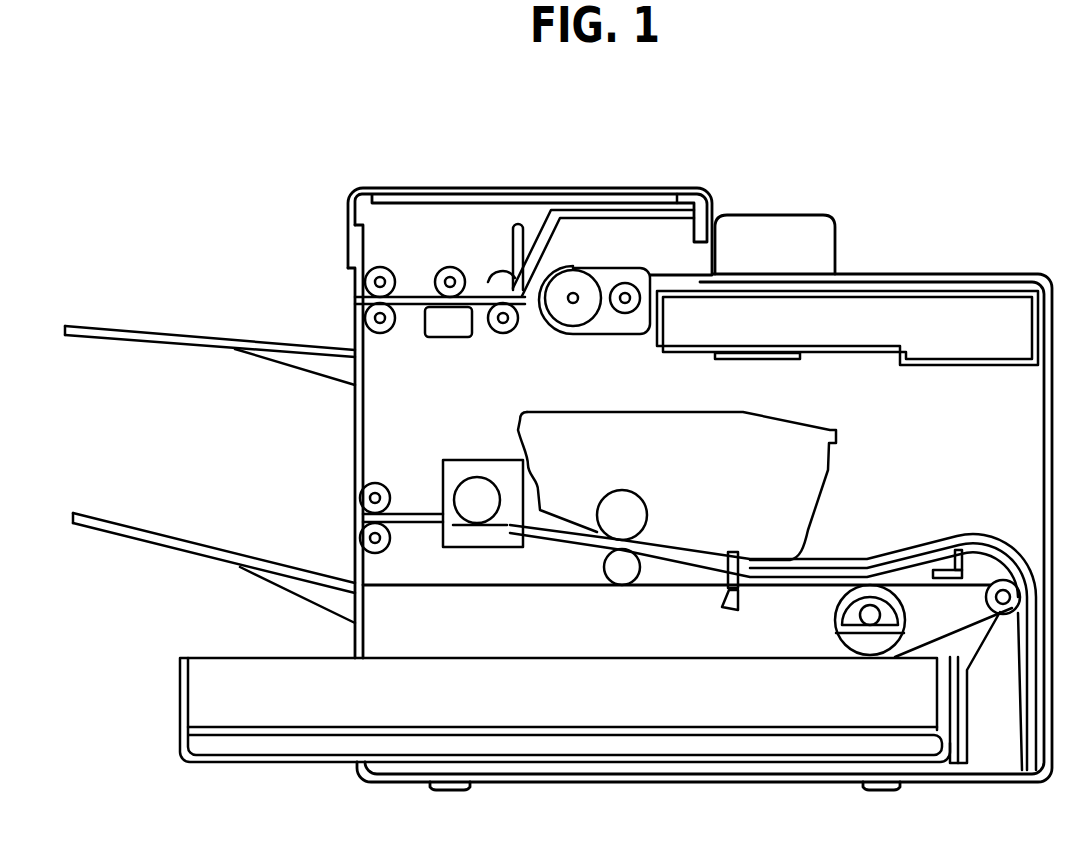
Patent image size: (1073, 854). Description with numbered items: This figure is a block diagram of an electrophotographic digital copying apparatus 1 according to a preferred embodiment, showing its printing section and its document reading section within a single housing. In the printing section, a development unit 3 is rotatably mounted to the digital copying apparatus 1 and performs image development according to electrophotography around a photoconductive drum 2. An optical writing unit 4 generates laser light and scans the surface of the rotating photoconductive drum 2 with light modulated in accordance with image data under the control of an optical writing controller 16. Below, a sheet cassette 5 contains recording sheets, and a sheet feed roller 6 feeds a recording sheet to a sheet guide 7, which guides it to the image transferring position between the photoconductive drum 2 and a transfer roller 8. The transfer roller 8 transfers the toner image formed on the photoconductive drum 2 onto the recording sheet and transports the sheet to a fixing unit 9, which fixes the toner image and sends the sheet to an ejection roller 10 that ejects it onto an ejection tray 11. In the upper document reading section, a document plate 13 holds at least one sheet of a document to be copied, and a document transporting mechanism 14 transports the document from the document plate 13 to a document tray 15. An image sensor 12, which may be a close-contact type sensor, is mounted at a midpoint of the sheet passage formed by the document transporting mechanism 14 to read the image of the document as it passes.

The digital copying apparatus 1 is at (967, 135).
The photoconductive drum 2 is at (627, 490).
The development unit 3 is at (603, 425).
The optical writing unit 4 is at (992, 308).
The sheet cassette 5 is at (232, 764).
The sheet feed roller 6 is at (832, 618).
The sheet guide 7 is at (990, 534).
The transfer roller 8 is at (620, 576).
The fixing unit 9 is at (467, 548).
The ejection roller 10 is at (360, 478).
The ejection tray 11 is at (131, 525).
The image sensor 12 is at (440, 321).
The document plate 13 is at (910, 272).
The document transporting mechanism 14 is at (468, 236).
The document tray 15 is at (132, 327).
The optical writing controller 16 is at (800, 356).